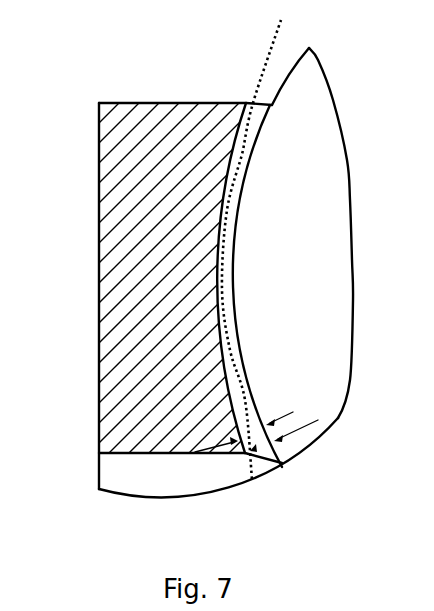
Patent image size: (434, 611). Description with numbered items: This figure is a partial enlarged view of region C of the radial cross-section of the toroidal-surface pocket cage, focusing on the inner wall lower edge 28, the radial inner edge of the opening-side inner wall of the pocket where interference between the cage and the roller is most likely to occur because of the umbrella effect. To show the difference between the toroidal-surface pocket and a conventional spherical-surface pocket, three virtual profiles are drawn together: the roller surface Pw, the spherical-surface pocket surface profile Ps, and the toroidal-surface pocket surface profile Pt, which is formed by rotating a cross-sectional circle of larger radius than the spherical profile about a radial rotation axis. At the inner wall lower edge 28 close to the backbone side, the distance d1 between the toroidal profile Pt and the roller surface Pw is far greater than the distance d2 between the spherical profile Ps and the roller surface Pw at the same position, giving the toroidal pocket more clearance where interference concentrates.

The inner wall lower edge 28 is at (244, 452).
The spherical-surface pocket surface profile Ps is at (141, 278).
The roller surface Pw is at (165, 250).
The toroidal-surface pocket surface profile Pt is at (215, 251).
The region C is at (391, 64).
The distance d1 is at (292, 420).
The distance d2 is at (226, 461).